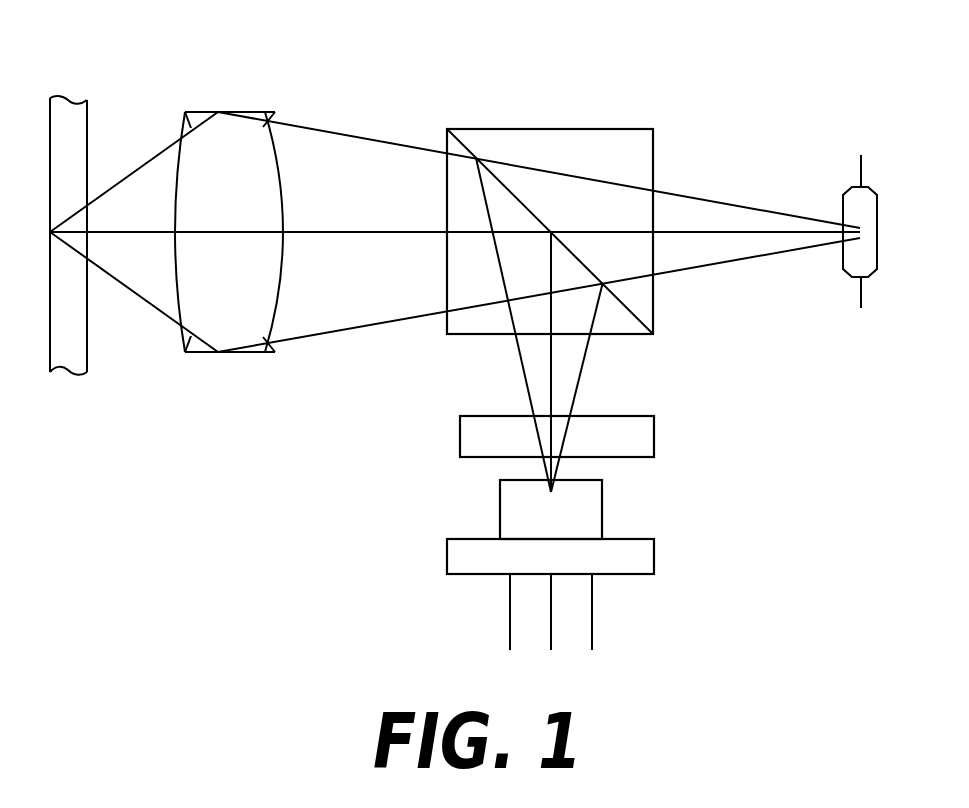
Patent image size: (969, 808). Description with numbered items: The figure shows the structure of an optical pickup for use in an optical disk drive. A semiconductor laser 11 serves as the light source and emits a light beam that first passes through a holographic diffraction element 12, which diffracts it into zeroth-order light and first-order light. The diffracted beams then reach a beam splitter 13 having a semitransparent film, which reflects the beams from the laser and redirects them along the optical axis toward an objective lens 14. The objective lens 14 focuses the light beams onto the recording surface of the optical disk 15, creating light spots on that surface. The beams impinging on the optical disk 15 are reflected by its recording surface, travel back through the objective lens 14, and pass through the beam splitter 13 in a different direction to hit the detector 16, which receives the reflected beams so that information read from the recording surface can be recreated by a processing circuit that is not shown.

The semiconductor laser 11 is at (654, 552).
The holographic diffraction element 12 is at (654, 433).
The beam splitter 13 is at (569, 129).
The objective lens 14 is at (262, 352).
The optical disk 15 is at (78, 375).
The detector 16 is at (878, 188).